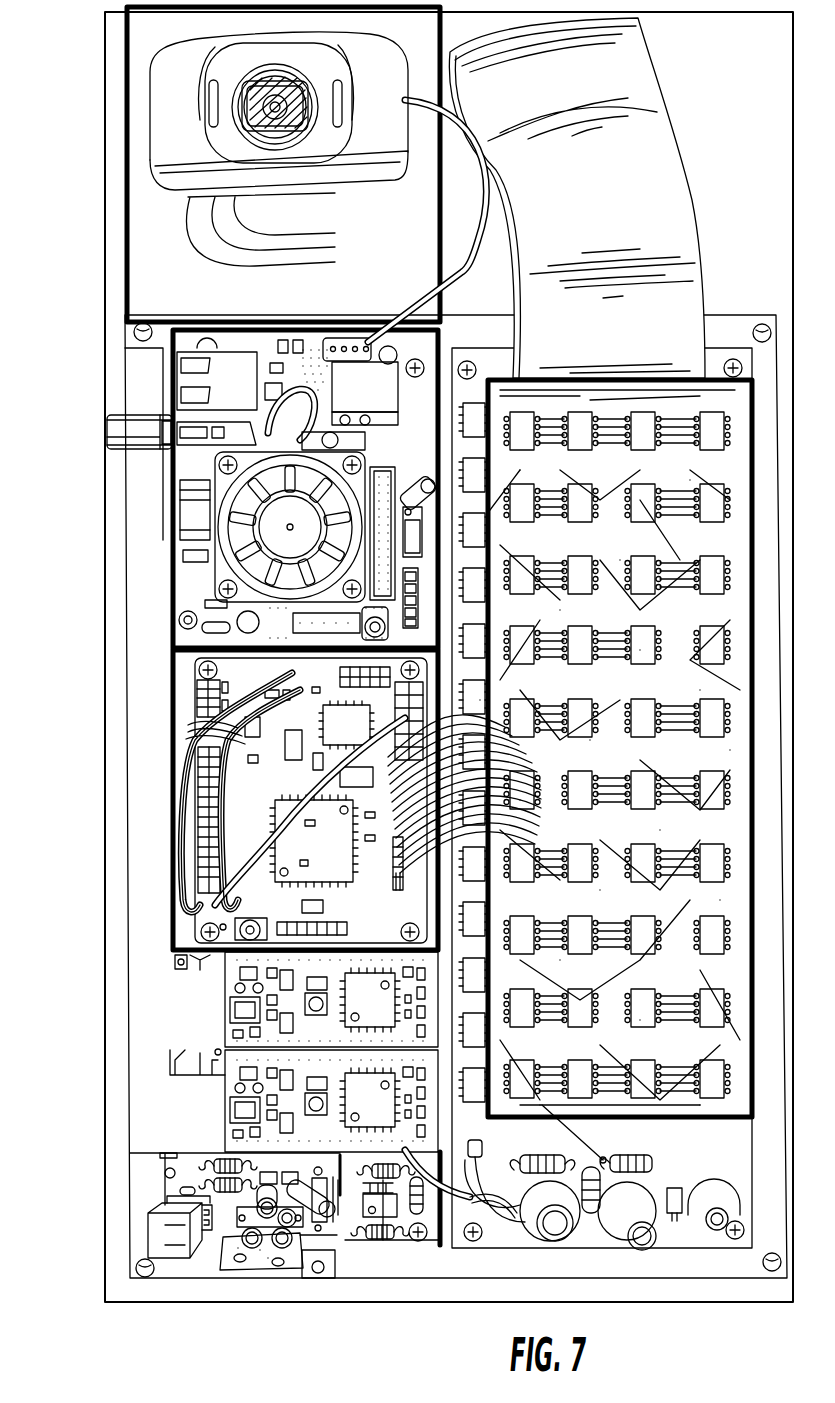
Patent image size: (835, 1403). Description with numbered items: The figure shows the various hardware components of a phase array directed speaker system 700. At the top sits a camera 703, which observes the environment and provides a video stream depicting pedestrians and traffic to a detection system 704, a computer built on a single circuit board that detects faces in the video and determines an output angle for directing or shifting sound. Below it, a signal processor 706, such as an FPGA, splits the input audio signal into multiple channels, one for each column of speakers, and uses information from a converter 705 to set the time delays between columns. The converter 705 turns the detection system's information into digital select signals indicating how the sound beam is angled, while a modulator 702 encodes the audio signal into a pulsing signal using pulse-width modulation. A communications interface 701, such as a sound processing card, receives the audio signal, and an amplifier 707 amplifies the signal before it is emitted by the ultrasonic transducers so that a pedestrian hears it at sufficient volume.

The phase array directed speaker system 700 is at (54, 14).
The communications interface 701 is at (385, 1228).
The modulator 702 is at (225, 1112).
The camera 703 is at (362, 186).
The detection system 704 is at (173, 575).
The converter 705 is at (225, 1010).
The signal processor 706 is at (175, 856).
The amplifier 707 is at (700, 1113).